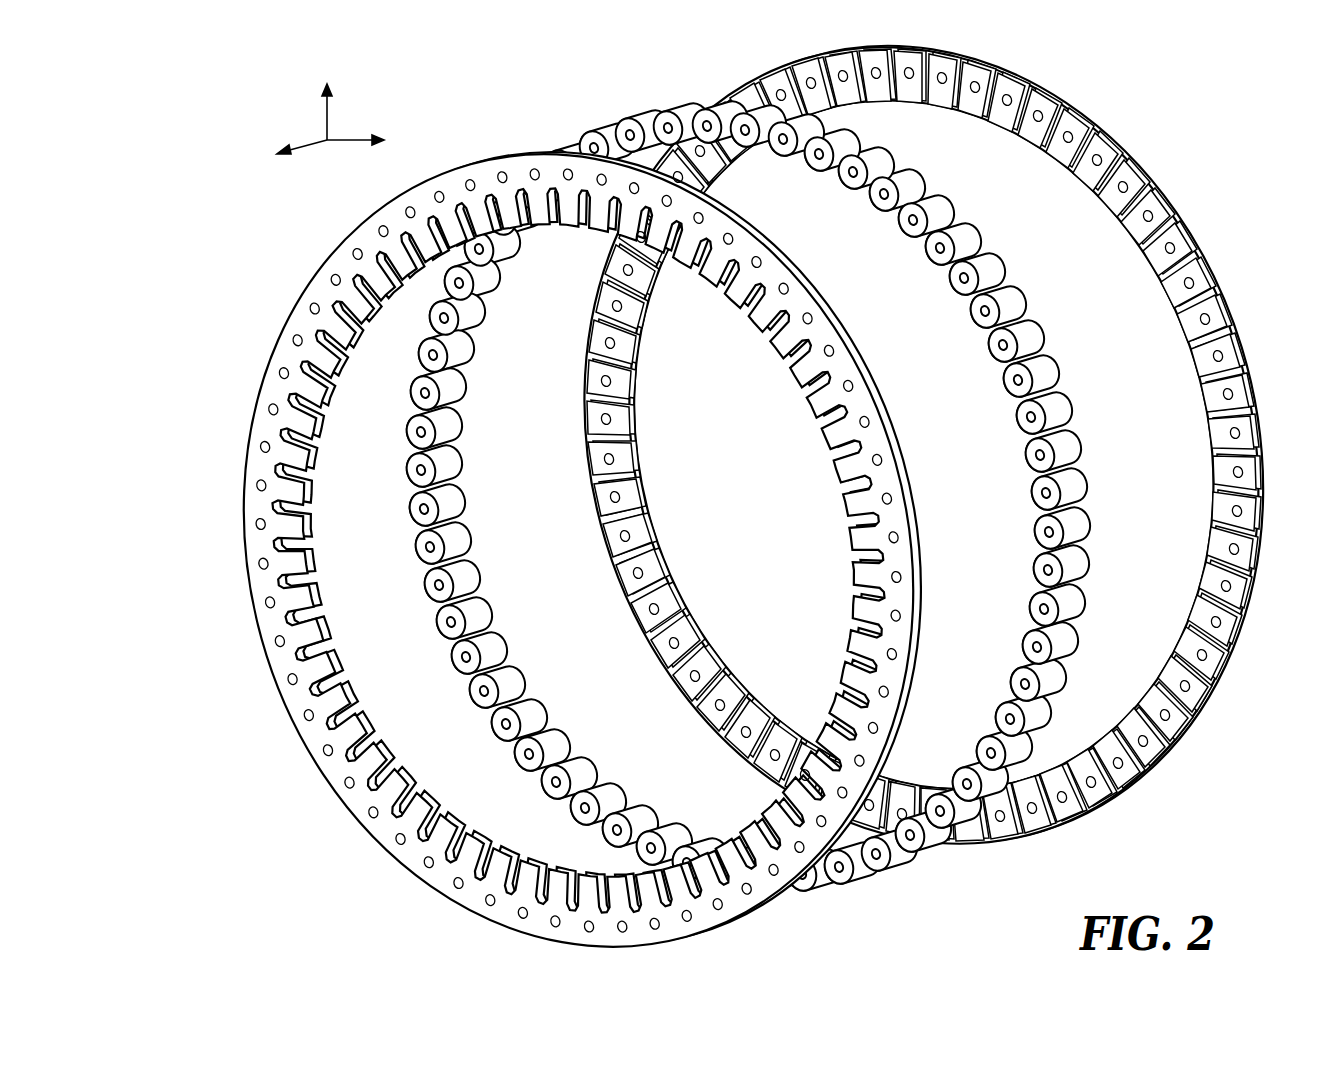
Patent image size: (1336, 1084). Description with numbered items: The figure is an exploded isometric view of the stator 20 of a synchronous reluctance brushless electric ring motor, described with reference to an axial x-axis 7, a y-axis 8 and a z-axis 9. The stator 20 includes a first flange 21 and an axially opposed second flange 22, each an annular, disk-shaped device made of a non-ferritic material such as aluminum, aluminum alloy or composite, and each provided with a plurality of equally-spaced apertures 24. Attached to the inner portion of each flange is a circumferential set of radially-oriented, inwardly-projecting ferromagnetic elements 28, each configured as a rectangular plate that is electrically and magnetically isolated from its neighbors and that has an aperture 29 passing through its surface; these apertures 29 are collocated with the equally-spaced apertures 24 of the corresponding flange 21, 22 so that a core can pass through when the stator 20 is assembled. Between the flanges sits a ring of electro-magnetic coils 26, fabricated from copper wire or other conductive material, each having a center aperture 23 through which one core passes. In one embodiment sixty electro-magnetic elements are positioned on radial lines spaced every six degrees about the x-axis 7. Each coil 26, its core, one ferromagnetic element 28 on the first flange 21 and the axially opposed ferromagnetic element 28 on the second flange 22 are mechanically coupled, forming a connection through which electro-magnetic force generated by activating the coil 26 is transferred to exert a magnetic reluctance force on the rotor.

The x-axis 7 is at (278, 169).
The y-axis 8 is at (402, 154).
The z-axis 9 is at (334, 74).
The stator 20 is at (736, 512).
The first flange 21 is at (257, 583).
The second flange 22 is at (1103, 128).
The center aperture 23 is at (940, 248).
The equally-spaced apertures 24 is at (878, 462).
The electro-magnetic coil 26 is at (1063, 363).
The radially-oriented, inwardly-projecting ferromagnetic elements 28 is at (1170, 247).
The aperture 29 is at (1112, 198).